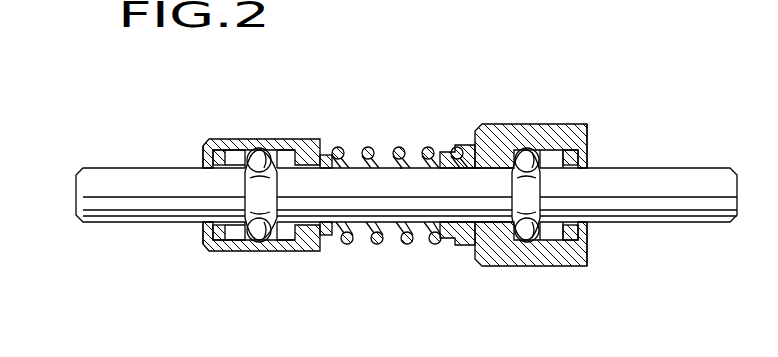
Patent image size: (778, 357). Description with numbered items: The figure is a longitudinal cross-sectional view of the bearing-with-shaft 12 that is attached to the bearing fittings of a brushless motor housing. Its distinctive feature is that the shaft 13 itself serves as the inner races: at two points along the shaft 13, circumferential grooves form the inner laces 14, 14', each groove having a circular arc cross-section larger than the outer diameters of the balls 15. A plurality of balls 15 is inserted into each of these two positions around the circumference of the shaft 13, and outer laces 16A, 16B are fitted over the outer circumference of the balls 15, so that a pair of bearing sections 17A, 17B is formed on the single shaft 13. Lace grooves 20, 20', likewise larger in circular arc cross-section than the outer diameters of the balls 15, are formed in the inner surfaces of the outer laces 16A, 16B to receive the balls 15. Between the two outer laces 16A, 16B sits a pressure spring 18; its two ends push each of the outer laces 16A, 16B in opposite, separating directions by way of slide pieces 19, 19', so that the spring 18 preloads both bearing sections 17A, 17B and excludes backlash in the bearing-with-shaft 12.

The bearing-with-shaft 12 is at (408, 132).
The shaft 13 is at (657, 185).
The inner lace 14 is at (204, 191).
The inner lace 14' is at (518, 155).
The balls 15 is at (247, 250).
The outer lace 16A is at (276, 148).
The outer lace 16B is at (563, 150).
The bearing section 17A is at (257, 260).
The bearing section 17B is at (526, 275).
The pressure spring 18 is at (405, 246).
The slide piece 19 is at (335, 234).
The slide piece 19' is at (458, 230).
The lace groove 20 is at (254, 162).
The lace groove 20' is at (537, 156).